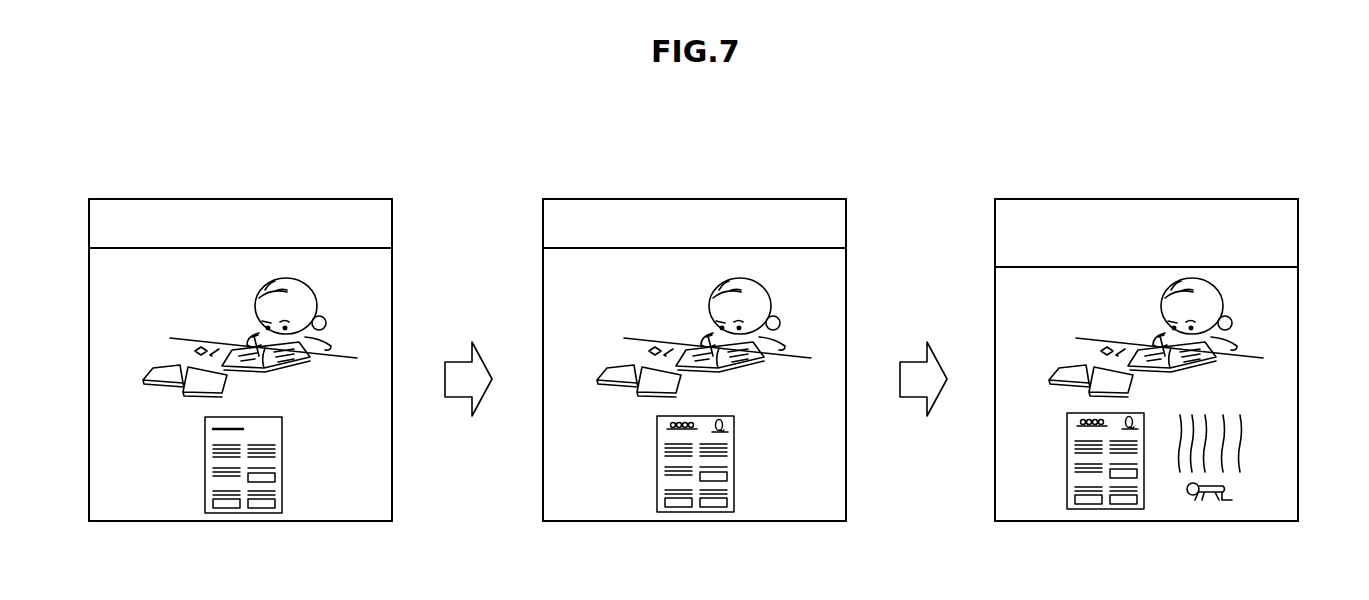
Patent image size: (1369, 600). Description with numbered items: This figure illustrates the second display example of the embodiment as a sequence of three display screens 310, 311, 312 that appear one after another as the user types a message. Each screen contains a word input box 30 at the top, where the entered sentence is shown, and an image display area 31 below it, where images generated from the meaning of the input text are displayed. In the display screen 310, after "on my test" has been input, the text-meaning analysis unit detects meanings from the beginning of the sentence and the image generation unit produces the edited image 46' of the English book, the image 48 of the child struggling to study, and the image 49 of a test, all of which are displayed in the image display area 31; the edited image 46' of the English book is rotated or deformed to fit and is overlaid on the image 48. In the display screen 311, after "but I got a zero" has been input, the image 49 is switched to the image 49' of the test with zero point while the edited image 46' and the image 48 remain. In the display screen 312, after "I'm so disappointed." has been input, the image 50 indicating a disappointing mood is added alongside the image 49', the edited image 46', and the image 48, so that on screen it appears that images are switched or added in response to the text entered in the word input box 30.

The display screen 310 is at (275, 183).
The display screen 311 is at (729, 183).
The display screen 312 is at (1181, 183).
The word input box 30 is at (303, 216).
The image display area 31 is at (303, 293).
The edited image of the English book 46' is at (593, 365).
The image of the child struggling to study 48 is at (243, 378).
The image of a test 49 is at (243, 491).
The image of the test with zero point 49' is at (900, 489).
The image indicating a disappointing mood 50 is at (1215, 509).